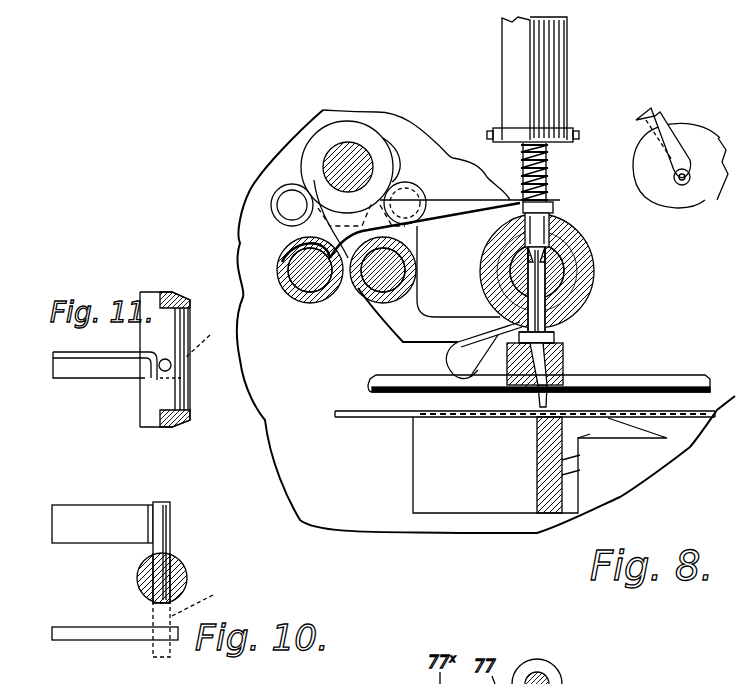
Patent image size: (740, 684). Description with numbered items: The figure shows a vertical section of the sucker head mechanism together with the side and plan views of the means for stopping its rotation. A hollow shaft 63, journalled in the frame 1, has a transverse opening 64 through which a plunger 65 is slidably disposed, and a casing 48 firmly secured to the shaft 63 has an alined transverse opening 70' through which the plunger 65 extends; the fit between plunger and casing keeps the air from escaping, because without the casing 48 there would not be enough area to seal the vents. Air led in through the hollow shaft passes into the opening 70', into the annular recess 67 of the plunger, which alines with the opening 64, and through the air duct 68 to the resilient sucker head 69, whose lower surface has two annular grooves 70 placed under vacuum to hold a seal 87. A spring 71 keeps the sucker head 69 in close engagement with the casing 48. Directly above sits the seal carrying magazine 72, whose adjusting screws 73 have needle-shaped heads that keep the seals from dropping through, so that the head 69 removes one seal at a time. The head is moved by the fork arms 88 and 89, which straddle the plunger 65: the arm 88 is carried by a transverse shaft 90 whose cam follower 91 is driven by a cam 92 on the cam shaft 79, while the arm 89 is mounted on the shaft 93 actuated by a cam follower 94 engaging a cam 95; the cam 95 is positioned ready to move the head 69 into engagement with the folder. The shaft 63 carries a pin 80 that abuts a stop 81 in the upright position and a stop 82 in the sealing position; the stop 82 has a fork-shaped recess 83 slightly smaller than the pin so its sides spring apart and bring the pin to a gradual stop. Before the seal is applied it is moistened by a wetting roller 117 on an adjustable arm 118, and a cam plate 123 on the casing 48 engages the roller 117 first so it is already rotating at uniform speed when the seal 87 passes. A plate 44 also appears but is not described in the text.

In FIG. 8, the frame 1 is at (340, 473).
In FIG. 8, the table plate 44 is at (362, 418).
In FIG. 8, the casing 48 is at (592, 276).
In FIG. 8, the hollow shaft 63 is at (565, 276).
In FIG. 11, the hollow shaft 63 is at (178, 292).
In FIG. 10, the hollow shaft 63 is at (187, 576).
In FIG. 8, the transverse opening 64 is at (556, 256).
In FIG. 8, the plunger 65 is at (543, 300).
In FIG. 8, the annular recess 67 is at (492, 243).
In FIG. 8, the air duct 68 is at (556, 336).
In FIG. 8, the sucker head 69 is at (565, 362).
In FIG. 8, the annular grooves 70 is at (517, 417).
In FIG. 8, the transverse opening 70' is at (586, 224).
In FIG. 8, the spring 71 is at (548, 163).
In FIG. 8, the seal carrying magazine 72 is at (576, 88).
In FIG. 8, the adjusting screws 73 is at (578, 136).
In FIG. 8, the cam shaft 79 is at (350, 165).
In FIG. 11, the pin 80 is at (172, 365).
In FIG. 10, the pin 80 is at (172, 522).
In FIG. 11, the stop 81 is at (84, 356).
In FIG. 10, the stop 81 is at (105, 515).
In FIG. 11, the stop 82 is at (125, 372).
In FIG. 10, the stop 82 is at (90, 627).
In FIG. 11, the fork-shaped recess 83 is at (209, 338).
In FIG. 10, the fork-shaped recess 83 is at (205, 598).
In FIG. 8, the seal 87 is at (520, 385).
In FIG. 8, the arm 88 is at (470, 190).
In FIG. 8, the arm 89 is at (399, 338).
In FIG. 8, the transverse shaft 90 is at (300, 297).
In FIG. 8, the cam follower 91 is at (290, 206).
In FIG. 8, the cam 92 is at (318, 147).
In FIG. 8, the shaft 93 is at (365, 287).
In FIG. 8, the cam follower 94 is at (407, 183).
In FIG. 8, the cam 95 is at (396, 140).
In FIG. 8, the wetting roller 117 is at (688, 212).
In FIG. 8, the adjustable arm 118 is at (650, 168).
In FIG. 8, the cam plate 123 is at (450, 392).